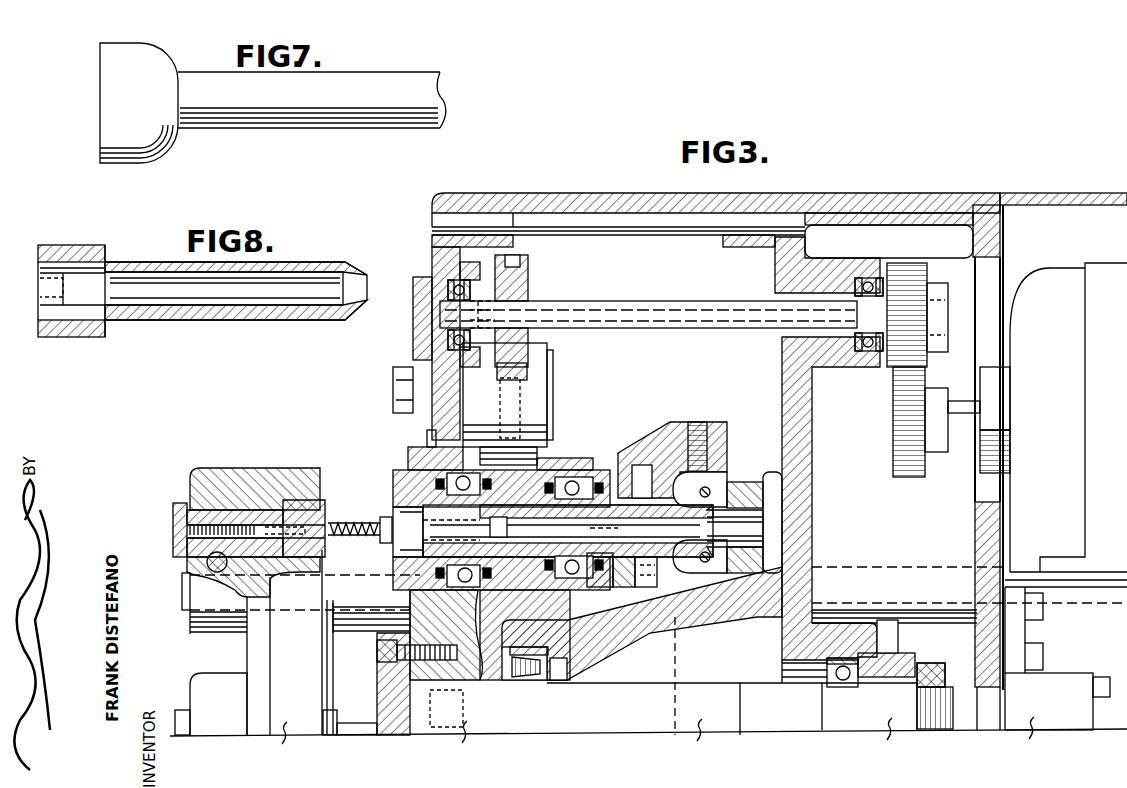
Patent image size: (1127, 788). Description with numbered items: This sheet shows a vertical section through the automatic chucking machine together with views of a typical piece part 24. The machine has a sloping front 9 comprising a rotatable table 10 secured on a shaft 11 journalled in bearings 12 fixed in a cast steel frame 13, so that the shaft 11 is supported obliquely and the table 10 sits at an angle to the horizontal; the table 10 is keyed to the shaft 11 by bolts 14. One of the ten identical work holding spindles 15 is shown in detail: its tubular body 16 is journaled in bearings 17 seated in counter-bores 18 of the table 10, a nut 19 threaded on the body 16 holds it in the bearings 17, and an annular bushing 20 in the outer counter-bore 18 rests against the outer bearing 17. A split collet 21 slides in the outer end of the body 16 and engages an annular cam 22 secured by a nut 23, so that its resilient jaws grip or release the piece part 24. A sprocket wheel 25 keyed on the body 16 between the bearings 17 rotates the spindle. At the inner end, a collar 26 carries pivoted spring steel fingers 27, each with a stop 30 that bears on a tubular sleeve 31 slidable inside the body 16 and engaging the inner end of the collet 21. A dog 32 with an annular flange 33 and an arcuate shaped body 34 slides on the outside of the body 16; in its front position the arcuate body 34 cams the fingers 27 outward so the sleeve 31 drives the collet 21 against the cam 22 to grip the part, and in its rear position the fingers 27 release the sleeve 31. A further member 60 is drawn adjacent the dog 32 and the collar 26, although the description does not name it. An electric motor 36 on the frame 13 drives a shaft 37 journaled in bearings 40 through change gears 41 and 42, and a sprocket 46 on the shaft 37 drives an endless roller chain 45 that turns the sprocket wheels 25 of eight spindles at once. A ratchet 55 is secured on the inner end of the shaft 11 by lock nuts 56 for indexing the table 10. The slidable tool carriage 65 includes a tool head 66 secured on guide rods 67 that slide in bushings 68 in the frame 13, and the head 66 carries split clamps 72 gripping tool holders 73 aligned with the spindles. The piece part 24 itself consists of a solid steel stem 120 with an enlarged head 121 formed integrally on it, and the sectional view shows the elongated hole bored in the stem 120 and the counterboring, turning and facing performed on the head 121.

In FIG. 3, the sloping front 9 is at (412, 424).
In FIG. 3, the rotatable table 10 is at (415, 700).
In FIG. 3, the shaft 11 is at (770, 720).
In FIG. 3, the bearings 12 is at (527, 683).
In FIG. 3, the cast steel frame 13 is at (832, 195).
In FIG. 3, the bolts 14 is at (375, 727).
In FIG. 3, the work holding spindle 15 is at (383, 472).
In FIG. 3, the tubular body 16 is at (520, 543).
In FIG. 3, the bearings 17 is at (481, 680).
In FIG. 3, the counter-bores 18 is at (443, 592).
In FIG. 3, the nut 19 is at (597, 593).
In FIG. 3, the annular bushing 20 is at (410, 468).
In FIG. 3, the split collet 21 is at (410, 537).
In FIG. 3, the annular cam 22 is at (394, 502).
In FIG. 3, the nut 23 is at (395, 566).
In FIG. 7, the piece part 24 is at (305, 133).
In FIG. 8, the piece part 24 is at (220, 330).
In FIG. 3, the piece part 24 is at (380, 526).
In FIG. 3, the sprocket wheel 25 is at (520, 449).
In FIG. 3, the collar 26 is at (726, 610).
In FIG. 3, the spring steel fingers 27 is at (708, 478).
In FIG. 3, the shoulder or stop 30 is at (745, 527).
In FIG. 3, the tubular sleeve 31 is at (584, 539).
In FIG. 3, the dog 32 is at (575, 583).
In FIG. 3, the annular flange 33 is at (640, 552).
In FIG. 3, the arcuate shaped body 34 is at (659, 558).
In FIG. 3, the electric motor 36 is at (1056, 277).
In FIG. 3, the shaft 37 is at (660, 302).
In FIG. 3, the bearings 40 is at (455, 282).
In FIG. 3, the change gear 41 is at (922, 470).
In FIG. 3, the change gear 42 is at (932, 253).
In FIG. 3, the endless roller chain 45 is at (522, 262).
In FIG. 3, the sprocket 46 is at (530, 286).
In FIG. 3, the ratchet 55 is at (900, 657).
In FIG. 3, the lock nuts 56 is at (940, 663).
In FIG. 3, the bracket 60 is at (650, 440).
In FIG. 3, the tool carriage 65 is at (186, 686).
In FIG. 3, the tool head 66 is at (250, 652).
In FIG. 3, the guide rods 67 is at (182, 593).
In FIG. 3, the bushing 68 is at (377, 645).
In FIG. 3, the split clamps 72 is at (300, 468).
In FIG. 3, the tool holder 73 is at (173, 518).
In FIG. 7, the solid steel stem 120 is at (430, 98).
In FIG. 8, the solid steel stem 120 is at (330, 263).
In FIG. 7, the enlarged head 121 is at (158, 132).
In FIG. 8, the enlarged head 121 is at (75, 250).